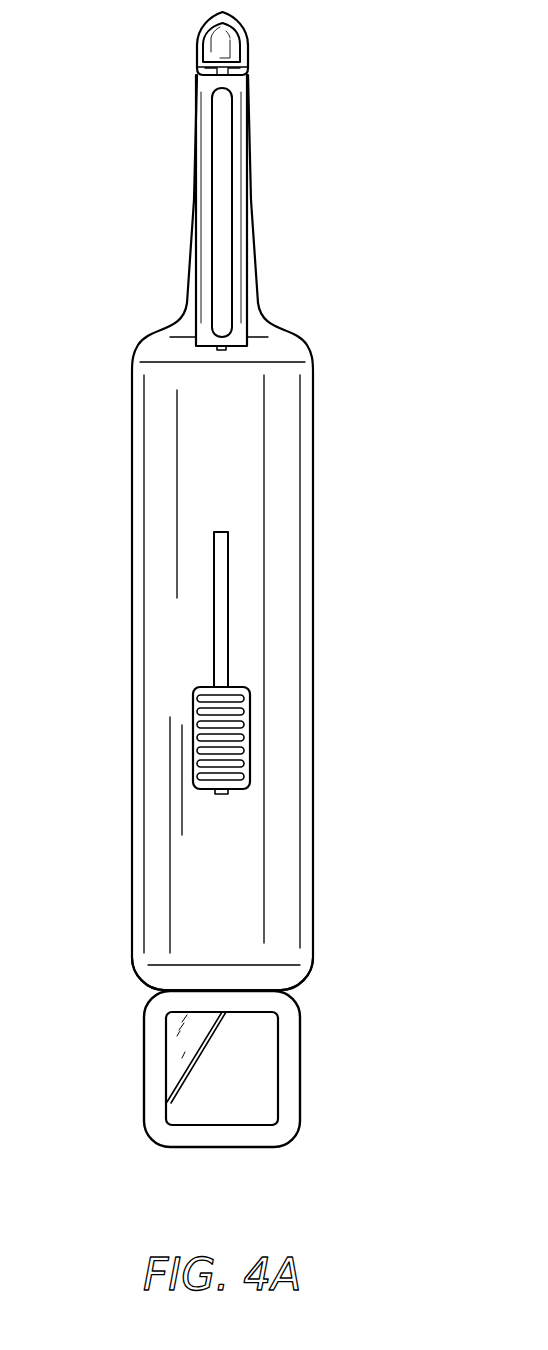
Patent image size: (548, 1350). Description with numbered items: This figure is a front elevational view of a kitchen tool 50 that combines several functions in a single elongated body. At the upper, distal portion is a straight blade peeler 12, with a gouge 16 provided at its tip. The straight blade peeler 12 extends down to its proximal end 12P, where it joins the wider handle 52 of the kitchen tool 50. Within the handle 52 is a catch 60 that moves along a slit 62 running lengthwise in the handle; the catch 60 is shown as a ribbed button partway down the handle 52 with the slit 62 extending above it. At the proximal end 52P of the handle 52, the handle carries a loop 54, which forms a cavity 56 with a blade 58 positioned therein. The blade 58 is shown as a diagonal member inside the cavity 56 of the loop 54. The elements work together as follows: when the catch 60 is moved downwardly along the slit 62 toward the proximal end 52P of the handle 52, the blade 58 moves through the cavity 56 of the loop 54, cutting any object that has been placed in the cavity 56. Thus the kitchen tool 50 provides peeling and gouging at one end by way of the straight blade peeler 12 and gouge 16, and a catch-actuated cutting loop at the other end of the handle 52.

The kitchen tool 50 is at (337, 242).
The gouge 16 is at (240, 30).
The straight blade peeler 12 is at (248, 167).
The proximal end of the straight blade peeler 12P is at (247, 347).
The handle 52 is at (287, 523).
The slit 62 is at (228, 617).
The catch 60 is at (250, 747).
The proximal end of the handle 52P is at (305, 978).
The loop 54 is at (300, 1102).
The cavity 56 is at (258, 1056).
The blade 58 is at (177, 1047).